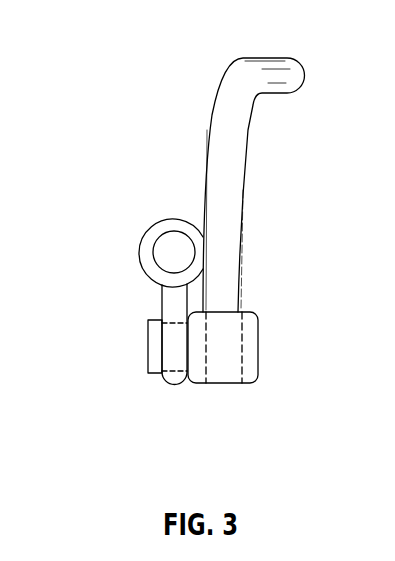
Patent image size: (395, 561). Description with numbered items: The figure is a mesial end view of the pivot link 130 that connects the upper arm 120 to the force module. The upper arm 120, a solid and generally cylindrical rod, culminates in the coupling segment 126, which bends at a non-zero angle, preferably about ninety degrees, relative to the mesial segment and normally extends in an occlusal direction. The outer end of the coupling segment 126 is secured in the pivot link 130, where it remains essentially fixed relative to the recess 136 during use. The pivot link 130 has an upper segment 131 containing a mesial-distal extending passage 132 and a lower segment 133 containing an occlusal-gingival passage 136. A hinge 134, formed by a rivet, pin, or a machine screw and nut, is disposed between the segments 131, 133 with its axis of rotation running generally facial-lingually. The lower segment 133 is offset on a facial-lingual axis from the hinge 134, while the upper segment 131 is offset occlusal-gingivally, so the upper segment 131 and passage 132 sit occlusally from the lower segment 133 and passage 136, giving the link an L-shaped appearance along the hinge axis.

The upper arm 120 is at (283, 69).
The coupling segment 126 is at (233, 96).
The upper segment 131 is at (147, 250).
The mesial-distal extending passage 132 is at (153, 260).
The pivot link 130 is at (147, 366).
The hinge 134 is at (147, 332).
The lower segment 133 is at (250, 340).
The occlusal-gingival passage 136 is at (243, 371).